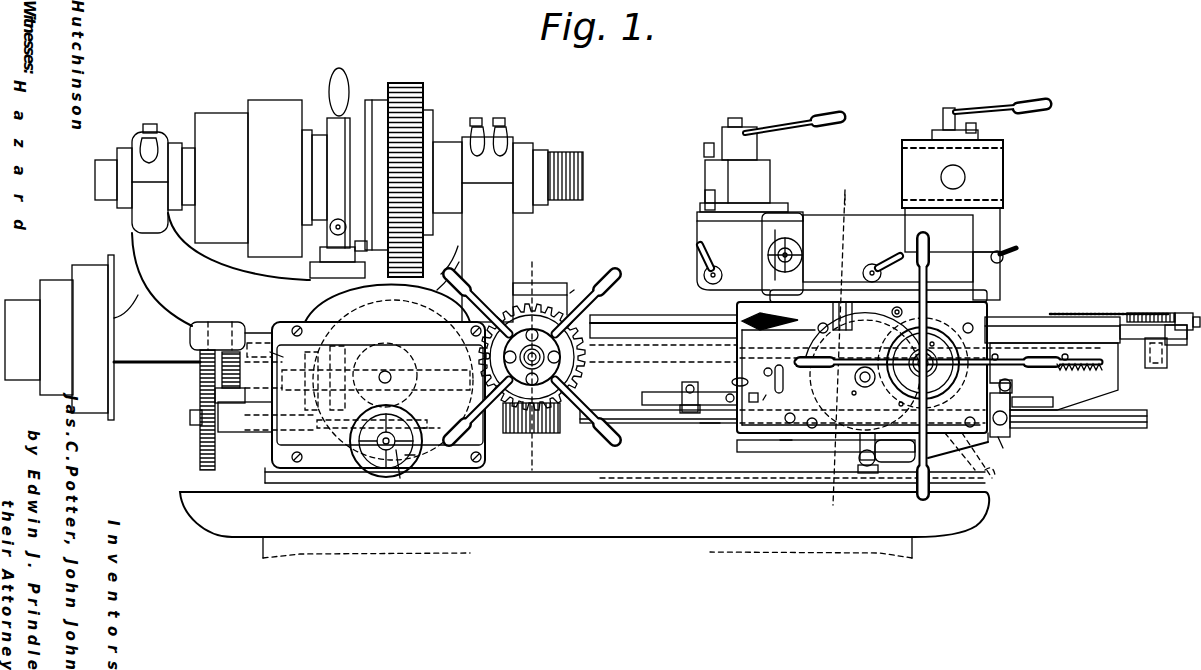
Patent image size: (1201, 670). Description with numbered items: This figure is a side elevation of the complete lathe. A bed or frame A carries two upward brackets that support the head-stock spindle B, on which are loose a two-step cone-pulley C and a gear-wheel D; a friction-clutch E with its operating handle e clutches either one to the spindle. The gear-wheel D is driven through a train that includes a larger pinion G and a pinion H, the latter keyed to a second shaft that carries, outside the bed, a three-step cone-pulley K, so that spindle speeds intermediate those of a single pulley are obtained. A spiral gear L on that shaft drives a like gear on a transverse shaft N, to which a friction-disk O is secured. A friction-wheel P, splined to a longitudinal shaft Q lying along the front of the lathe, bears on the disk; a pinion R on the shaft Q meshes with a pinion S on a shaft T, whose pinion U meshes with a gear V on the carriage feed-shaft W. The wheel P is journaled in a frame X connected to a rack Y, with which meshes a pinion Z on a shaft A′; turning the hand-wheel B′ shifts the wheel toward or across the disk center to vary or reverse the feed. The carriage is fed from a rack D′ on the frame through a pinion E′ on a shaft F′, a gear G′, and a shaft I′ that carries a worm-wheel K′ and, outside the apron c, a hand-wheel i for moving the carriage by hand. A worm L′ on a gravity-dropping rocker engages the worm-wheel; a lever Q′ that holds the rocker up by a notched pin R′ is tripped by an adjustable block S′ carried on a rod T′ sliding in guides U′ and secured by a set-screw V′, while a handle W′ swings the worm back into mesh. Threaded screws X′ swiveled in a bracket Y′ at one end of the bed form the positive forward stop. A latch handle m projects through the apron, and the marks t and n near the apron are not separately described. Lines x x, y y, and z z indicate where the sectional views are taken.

The bed or frame A is at (425, 293).
The head-stock spindle B is at (97, 178).
The two-step cone-pulley C is at (238, 120).
The gear-wheel D is at (420, 98).
The friction-clutch E is at (320, 123).
The operating lever or handle e is at (347, 92).
The larger pinion G is at (454, 270).
The three-step cone-pulley K is at (102, 337).
The friction-disk O is at (328, 320).
The transversely-mounted shaft N is at (385, 350).
The friction-wheel P is at (338, 351).
The longitudinally-extending shaft Q is at (425, 370).
The frame X is at (318, 392).
The shaft T is at (190, 348).
The rack Y is at (428, 424).
The pinion Z is at (415, 455).
The shaft A′ is at (376, 478).
The hand-wheel B′ is at (400, 478).
The gear V is at (215, 465).
The pinion U is at (217, 327).
The pinion S is at (231, 346).
The pinion R is at (200, 385).
The tool-carriage feeding-shaft W is at (190, 418).
The section line y y is at (531, 363).
The guides U′ is at (690, 382).
The block S′ is at (726, 396).
The rod or bar T′ is at (710, 424).
The section line x x is at (835, 345).
The section line z z is at (686, 252).
The pinion E′ is at (860, 354).
The pinion H is at (923, 363).
The worm L′ is at (930, 462).
The shaft I′ is at (935, 342).
The hand-wheel or spider i is at (902, 317).
The pin t is at (763, 407).
The nut n is at (877, 387).
The handle m is at (736, 383).
The shaft F′ is at (852, 395).
The gear G′ is at (900, 405).
The apron c is at (786, 440).
The lever Q′ is at (838, 446).
The pin R′ is at (858, 458).
The spiral gear L is at (958, 459).
The worm-wheel K′ is at (970, 455).
The rack D′ is at (1086, 336).
The threaded rods or screws X′ is at (1136, 313).
The bracket Y′ is at (1162, 325).
The set-screw V′ is at (1005, 430).
The handle W′ is at (1003, 448).